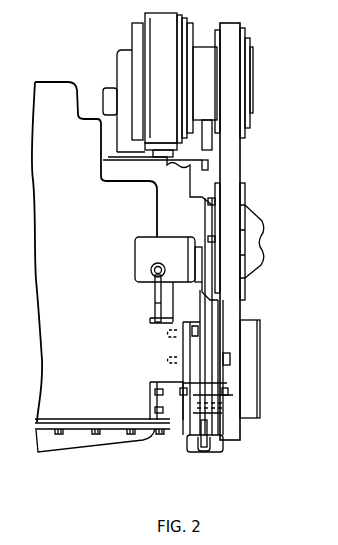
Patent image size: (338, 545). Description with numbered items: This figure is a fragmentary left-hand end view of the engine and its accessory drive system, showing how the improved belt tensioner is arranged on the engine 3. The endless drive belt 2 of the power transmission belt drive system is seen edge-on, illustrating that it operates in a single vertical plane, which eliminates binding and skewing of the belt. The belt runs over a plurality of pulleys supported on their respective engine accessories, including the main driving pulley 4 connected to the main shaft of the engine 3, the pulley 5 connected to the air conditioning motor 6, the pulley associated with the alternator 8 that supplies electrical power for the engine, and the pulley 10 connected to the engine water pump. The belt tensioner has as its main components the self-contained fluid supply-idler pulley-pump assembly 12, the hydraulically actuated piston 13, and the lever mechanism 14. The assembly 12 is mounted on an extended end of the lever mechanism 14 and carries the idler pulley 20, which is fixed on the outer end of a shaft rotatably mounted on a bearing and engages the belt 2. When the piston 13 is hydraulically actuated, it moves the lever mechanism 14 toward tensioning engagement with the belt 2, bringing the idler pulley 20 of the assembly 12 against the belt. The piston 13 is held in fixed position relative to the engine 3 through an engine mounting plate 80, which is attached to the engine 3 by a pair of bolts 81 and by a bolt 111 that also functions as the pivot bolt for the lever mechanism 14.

The endless drive belt 2 is at (228, 172).
The engine 3 is at (78, 320).
The main driving pulley 4 is at (240, 406).
The pulley 5 is at (245, 33).
The air conditioning motor 6 is at (160, 33).
The alternator 8 is at (125, 65).
The pulley 10 is at (248, 198).
The fluid supply-idler pulley-pump assembly 12 is at (135, 248).
The hydraulically actuated piston 13 is at (209, 454).
The lever mechanism 14 is at (223, 332).
The idler pulley 20 is at (250, 282).
The engine mounting plate 80 is at (183, 350).
The bolts 81 is at (196, 330).
The bolt 111 is at (230, 358).